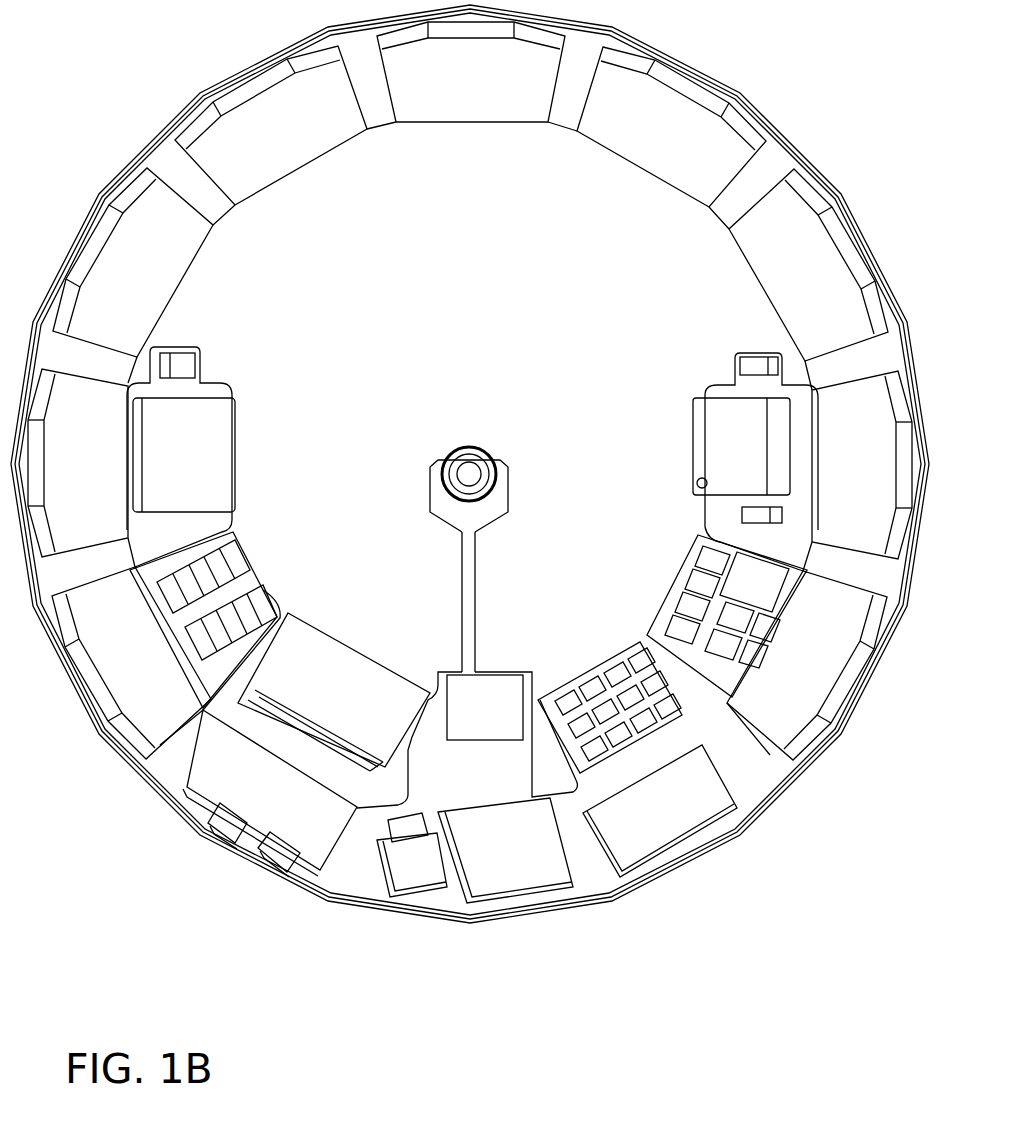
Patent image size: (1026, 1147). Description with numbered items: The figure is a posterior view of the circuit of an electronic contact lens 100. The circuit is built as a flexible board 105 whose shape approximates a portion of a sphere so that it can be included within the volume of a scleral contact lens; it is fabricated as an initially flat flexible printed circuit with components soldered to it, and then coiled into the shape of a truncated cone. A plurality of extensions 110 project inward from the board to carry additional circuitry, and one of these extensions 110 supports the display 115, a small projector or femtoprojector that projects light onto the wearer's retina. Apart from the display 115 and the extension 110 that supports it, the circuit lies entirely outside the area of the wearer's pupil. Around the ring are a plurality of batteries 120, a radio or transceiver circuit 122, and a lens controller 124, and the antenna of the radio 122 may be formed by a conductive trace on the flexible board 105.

The electronic contact lens 100 is at (92, 116).
The flexible board 105 is at (705, 858).
The extensions 110 is at (232, 383).
The display 115 is at (494, 459).
The batteries 120 is at (477, 124).
The radio 122 is at (696, 428).
The lens controller 124 is at (233, 435).